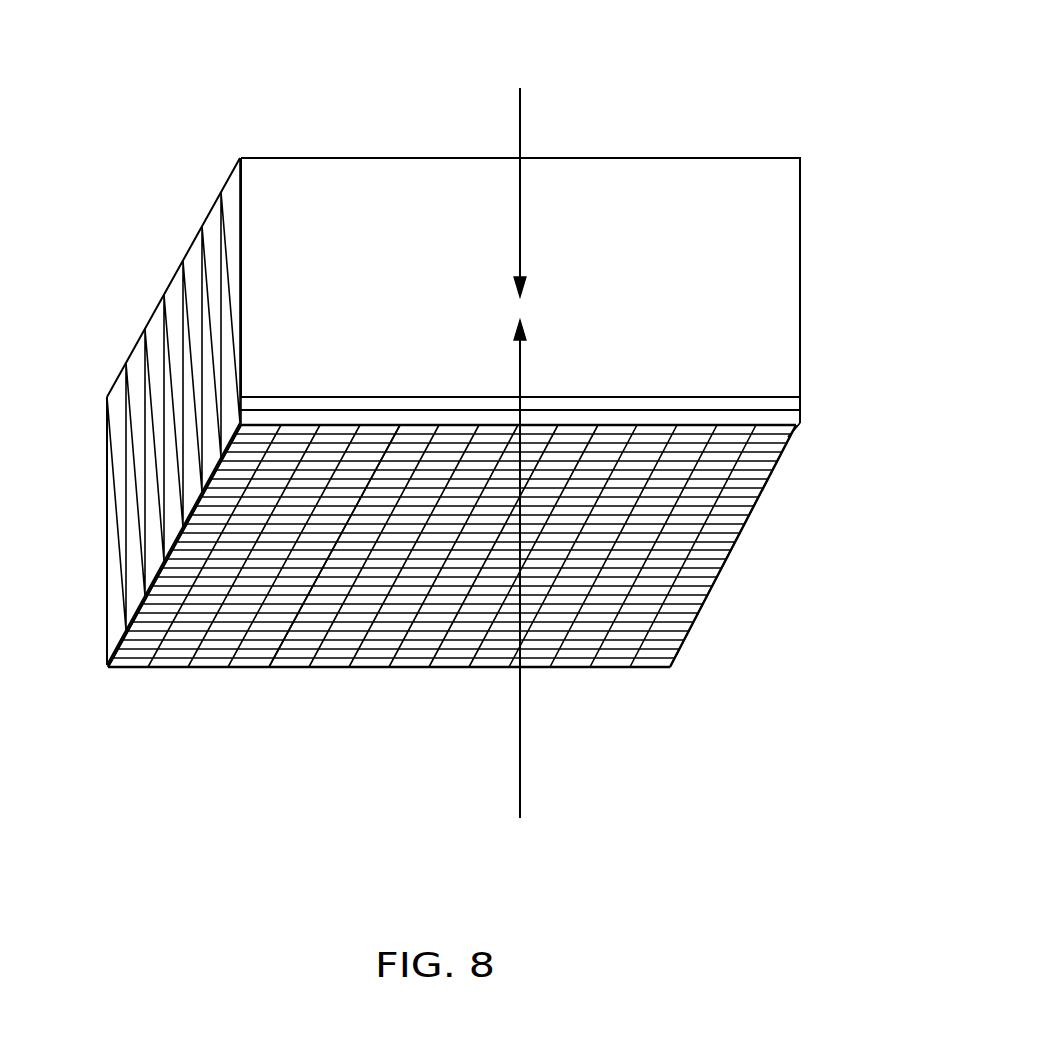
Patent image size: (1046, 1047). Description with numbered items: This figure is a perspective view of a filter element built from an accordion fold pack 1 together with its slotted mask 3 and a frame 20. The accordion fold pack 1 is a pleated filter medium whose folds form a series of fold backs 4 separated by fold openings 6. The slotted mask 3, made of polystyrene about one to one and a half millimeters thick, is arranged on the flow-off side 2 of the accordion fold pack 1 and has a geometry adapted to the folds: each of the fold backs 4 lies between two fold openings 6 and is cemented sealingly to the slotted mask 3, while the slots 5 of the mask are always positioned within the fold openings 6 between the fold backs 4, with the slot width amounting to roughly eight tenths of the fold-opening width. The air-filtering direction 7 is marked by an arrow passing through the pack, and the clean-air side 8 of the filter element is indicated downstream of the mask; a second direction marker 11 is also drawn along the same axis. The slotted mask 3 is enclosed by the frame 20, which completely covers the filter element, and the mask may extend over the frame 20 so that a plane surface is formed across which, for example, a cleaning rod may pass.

The accordion fold pack 1 is at (760, 292).
The flow-off side 2 is at (130, 761).
The slotted mask 3 is at (222, 516).
The fold backs 4 is at (200, 490).
The slots 5 is at (247, 430).
The fold openings 6 is at (232, 408).
The air-filtering direction 7 is at (521, 105).
The clean-air side 8 is at (353, 792).
The outgoing light direction 11 is at (521, 797).
The frame 20 is at (742, 392).